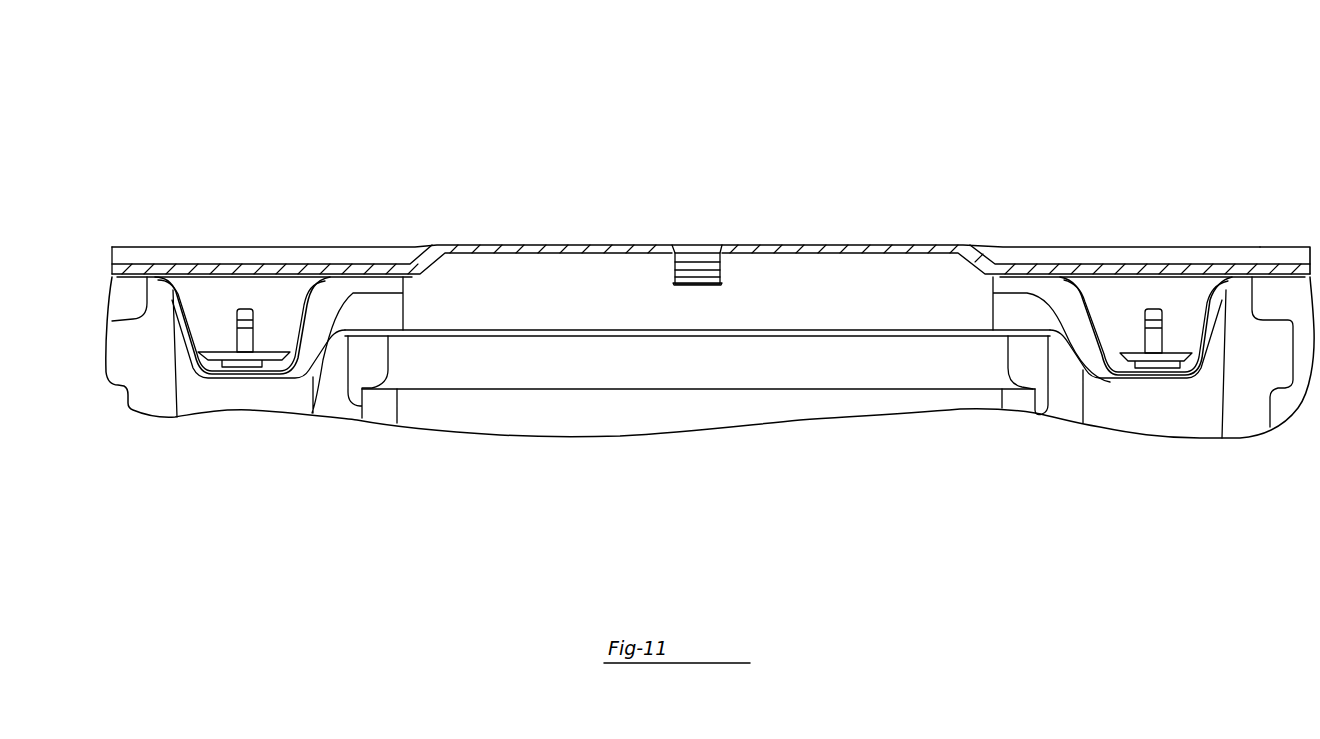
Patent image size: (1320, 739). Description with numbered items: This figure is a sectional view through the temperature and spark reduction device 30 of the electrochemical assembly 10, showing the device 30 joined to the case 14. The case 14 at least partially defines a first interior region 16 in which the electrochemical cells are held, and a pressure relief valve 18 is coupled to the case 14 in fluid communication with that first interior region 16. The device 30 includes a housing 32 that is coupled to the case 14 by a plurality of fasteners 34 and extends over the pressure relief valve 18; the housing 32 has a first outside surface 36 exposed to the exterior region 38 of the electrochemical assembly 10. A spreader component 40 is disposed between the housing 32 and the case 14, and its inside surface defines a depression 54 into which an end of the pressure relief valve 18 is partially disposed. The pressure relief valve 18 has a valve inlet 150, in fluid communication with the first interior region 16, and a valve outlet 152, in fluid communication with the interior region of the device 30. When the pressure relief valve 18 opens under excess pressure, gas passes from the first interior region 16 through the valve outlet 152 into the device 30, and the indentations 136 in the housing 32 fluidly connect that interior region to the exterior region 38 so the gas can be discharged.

The electrochemical assembly 10 is at (1226, 131).
The case 14 is at (914, 244).
The first interior region 16 is at (102, 264).
The pressure relief valve 18 is at (685, 257).
The temperature and spark reduction device 30 is at (473, 372).
The housing 32 is at (347, 337).
The fasteners 34 is at (240, 309).
The first outside surface 36 is at (255, 376).
The exterior region 38 is at (152, 481).
The spreader component 40 is at (870, 296).
The depression 54 is at (712, 268).
The indentations 136 is at (324, 303).
The valve inlet 150 is at (727, 245).
The valve outlet 152 is at (698, 286).